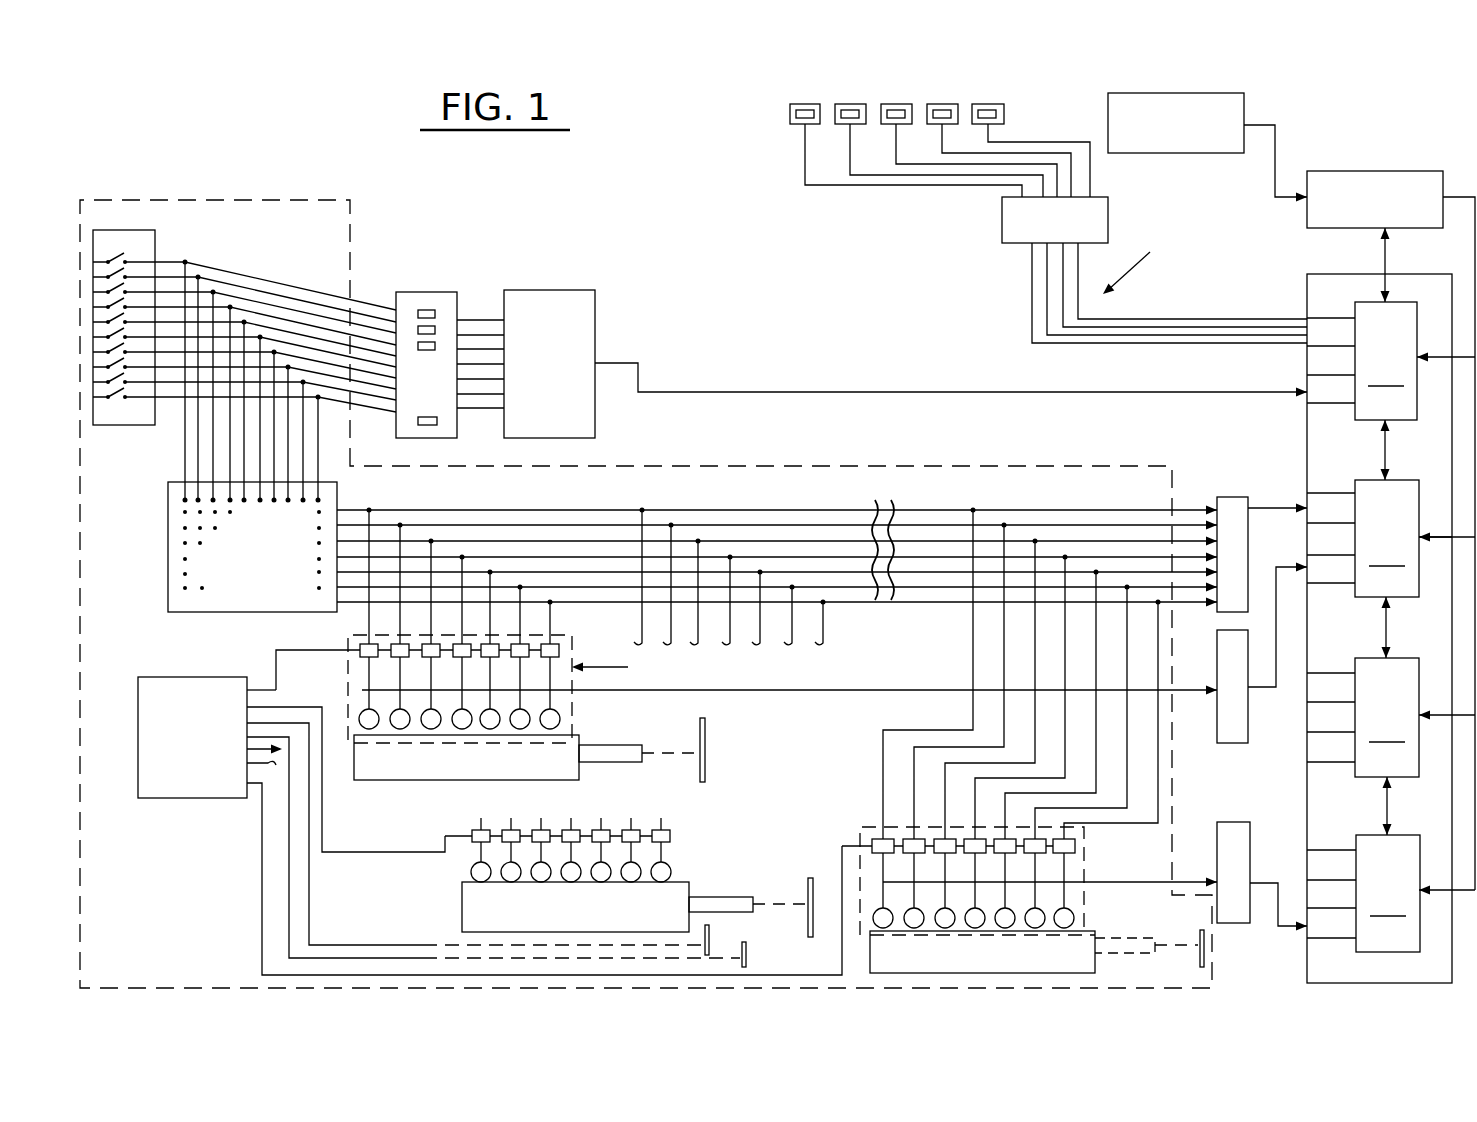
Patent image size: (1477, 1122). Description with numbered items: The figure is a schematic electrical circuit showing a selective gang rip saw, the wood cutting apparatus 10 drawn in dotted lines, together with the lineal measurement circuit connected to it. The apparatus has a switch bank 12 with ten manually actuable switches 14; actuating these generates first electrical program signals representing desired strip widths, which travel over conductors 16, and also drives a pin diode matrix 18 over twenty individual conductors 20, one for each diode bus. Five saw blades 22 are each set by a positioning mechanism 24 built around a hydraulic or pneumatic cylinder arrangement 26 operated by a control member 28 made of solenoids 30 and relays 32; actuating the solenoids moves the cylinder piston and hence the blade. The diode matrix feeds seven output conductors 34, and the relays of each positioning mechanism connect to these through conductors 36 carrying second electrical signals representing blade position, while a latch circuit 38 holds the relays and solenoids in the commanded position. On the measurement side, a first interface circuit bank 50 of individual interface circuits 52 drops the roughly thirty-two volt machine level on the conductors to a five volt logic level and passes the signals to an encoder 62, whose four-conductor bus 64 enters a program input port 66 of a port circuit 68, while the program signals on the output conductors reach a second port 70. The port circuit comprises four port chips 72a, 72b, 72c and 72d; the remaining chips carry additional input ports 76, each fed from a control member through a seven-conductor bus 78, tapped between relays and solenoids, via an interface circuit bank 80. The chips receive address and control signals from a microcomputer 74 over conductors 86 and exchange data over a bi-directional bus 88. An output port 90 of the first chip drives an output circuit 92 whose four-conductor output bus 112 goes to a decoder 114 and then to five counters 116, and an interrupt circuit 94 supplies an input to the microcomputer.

The wood cutting apparatus 10 is at (350, 222).
The switch bank 12 is at (138, 230).
The manually actuable switches 14 is at (118, 258).
The conductors 16 is at (297, 290).
The diode matrix 18 is at (168, 565).
The individual conductors 20 is at (182, 445).
The saw blades 22 is at (706, 742).
The positioning mechanism 24 is at (330, 728).
The cylinder arrangement 26 is at (385, 778).
The control member 28 is at (619, 670).
The solenoids 30 is at (561, 718).
The relays 32 is at (553, 650).
The output conductors 34 is at (584, 508).
The conductors 36 is at (365, 612).
The latch circuit 38 is at (158, 800).
The first interface circuit bank 50 is at (428, 292).
The interface circuits 52 is at (435, 312).
The encoder 62 is at (588, 300).
The four-conductor bus 64 is at (882, 392).
The program input port 66 is at (1332, 392).
The port circuit 68 is at (1300, 270).
The second port 70 is at (1322, 505).
The port chip 72a is at (1386, 391).
The port chip 72b is at (1387, 569).
The port chip 72c is at (1387, 746).
The port chip 72d is at (1388, 893).
The microcomputer 74 is at (1382, 170).
The additional input ports 76 is at (1332, 573).
The bus 78 is at (937, 690).
The interface circuit banks 80 is at (1232, 497).
The address and control signal conductors 86 is at (1432, 536).
The bi-directional bus 88 is at (1385, 244).
The output port 90 is at (1322, 337).
The output circuit 92 is at (1141, 263).
The interrupt circuit 94 is at (1170, 153).
The output bus 112 is at (1185, 318).
The decoder 114 is at (1003, 220).
The counters 116 is at (788, 110).